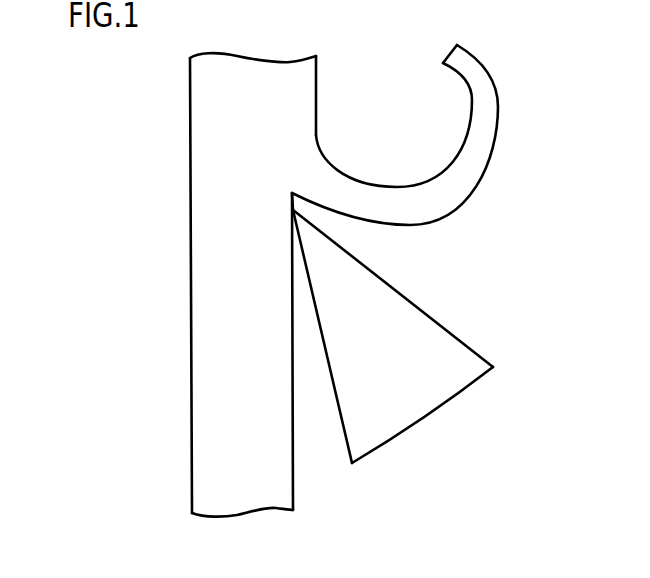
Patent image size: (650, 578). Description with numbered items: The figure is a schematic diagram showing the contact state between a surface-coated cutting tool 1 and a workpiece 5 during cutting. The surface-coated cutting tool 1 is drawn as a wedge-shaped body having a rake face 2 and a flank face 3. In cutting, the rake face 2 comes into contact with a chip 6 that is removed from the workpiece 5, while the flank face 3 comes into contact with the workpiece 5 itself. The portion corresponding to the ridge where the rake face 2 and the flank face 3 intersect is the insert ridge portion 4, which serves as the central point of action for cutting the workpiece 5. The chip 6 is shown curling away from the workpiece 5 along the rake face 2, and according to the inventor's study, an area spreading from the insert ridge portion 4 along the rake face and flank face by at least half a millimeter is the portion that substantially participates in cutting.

The surface-coated cutting tool 1 is at (372, 311).
The rake face 2 is at (425, 312).
The flank face 3 is at (336, 404).
The insert ridge portion 4 is at (293, 209).
The workpiece 5 is at (230, 488).
The chip 6 is at (490, 120).